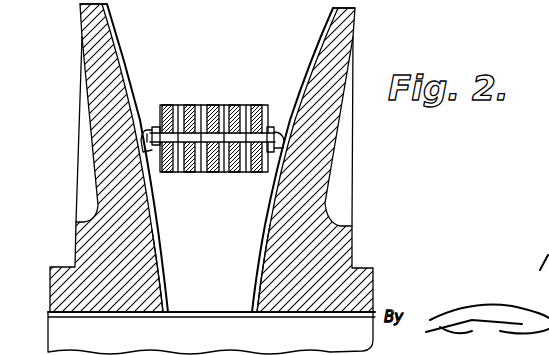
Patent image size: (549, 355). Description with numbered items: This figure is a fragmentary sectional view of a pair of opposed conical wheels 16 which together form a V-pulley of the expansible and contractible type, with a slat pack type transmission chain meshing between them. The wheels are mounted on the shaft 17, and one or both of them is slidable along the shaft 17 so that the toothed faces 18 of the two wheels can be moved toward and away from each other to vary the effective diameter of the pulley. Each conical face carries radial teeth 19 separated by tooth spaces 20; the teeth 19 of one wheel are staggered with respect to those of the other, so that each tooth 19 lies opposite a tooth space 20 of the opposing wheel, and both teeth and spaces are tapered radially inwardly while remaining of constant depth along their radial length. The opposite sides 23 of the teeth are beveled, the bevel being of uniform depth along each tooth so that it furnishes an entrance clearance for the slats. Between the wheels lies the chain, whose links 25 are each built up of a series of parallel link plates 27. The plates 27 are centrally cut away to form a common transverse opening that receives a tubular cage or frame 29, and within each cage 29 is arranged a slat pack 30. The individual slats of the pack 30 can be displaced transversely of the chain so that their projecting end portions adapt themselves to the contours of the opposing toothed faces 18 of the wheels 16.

The conical wheel 16 is at (69, 134).
The shaft 17 is at (202, 317).
The toothed face 18 is at (131, 59).
The radial tooth 19 is at (106, 22).
The tooth space 20 is at (92, 14).
The beveled tooth side 23 is at (158, 221).
The chain link 25 is at (229, 99).
The link plate 27 is at (196, 105).
The cage or frame 29 is at (277, 128).
The slat pack 30 is at (147, 118).